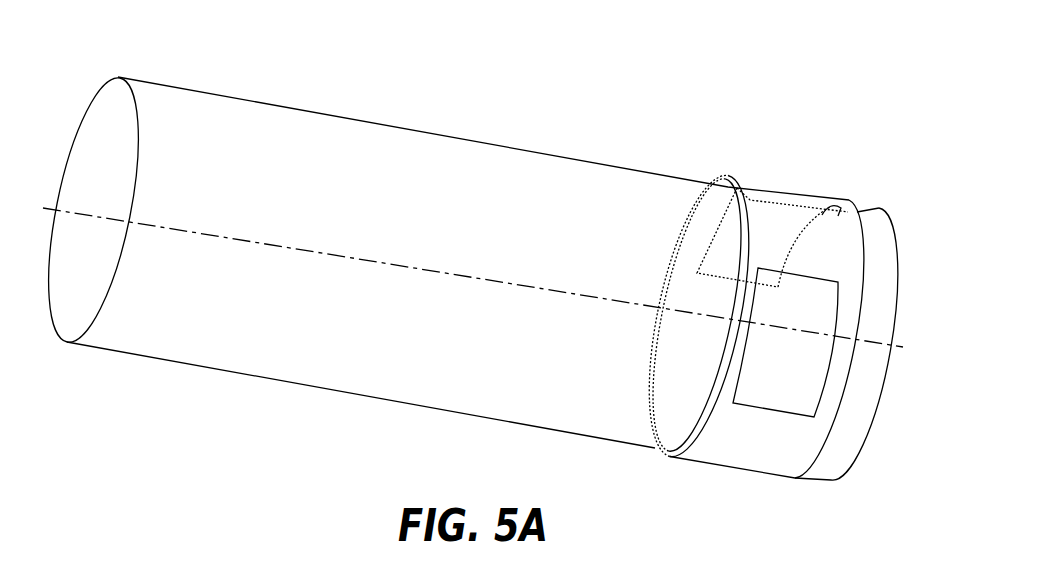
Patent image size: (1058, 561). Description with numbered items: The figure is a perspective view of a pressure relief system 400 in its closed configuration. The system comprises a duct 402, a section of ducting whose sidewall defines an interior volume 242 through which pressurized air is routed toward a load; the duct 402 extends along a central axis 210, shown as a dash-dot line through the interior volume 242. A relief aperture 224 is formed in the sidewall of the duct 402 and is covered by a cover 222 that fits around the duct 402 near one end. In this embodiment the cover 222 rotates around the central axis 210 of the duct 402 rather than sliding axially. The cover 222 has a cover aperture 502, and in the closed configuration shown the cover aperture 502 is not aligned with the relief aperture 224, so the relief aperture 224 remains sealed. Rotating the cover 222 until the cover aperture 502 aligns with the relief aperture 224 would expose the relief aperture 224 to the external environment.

The pressure relief system 400 is at (812, 28).
The duct 402 is at (264, 359).
The central axis 210 is at (112, 222).
The interior volume 242 is at (481, 316).
The cover 222 is at (709, 450).
The relief aperture 224 is at (778, 225).
The cover aperture 502 is at (828, 367).